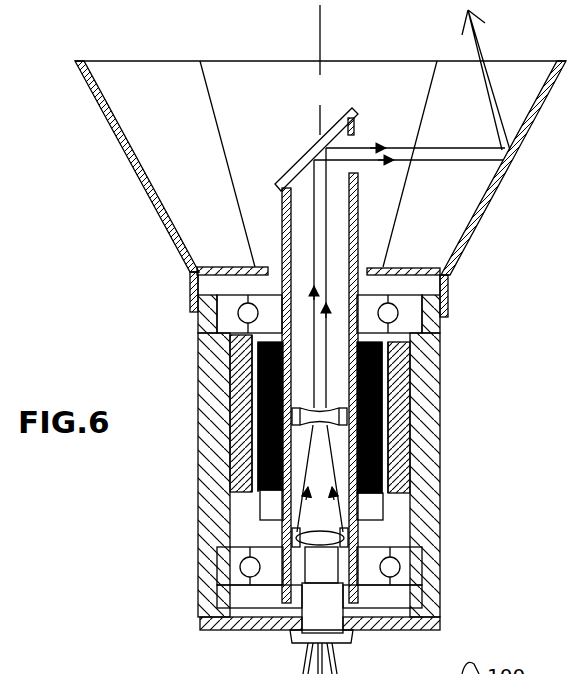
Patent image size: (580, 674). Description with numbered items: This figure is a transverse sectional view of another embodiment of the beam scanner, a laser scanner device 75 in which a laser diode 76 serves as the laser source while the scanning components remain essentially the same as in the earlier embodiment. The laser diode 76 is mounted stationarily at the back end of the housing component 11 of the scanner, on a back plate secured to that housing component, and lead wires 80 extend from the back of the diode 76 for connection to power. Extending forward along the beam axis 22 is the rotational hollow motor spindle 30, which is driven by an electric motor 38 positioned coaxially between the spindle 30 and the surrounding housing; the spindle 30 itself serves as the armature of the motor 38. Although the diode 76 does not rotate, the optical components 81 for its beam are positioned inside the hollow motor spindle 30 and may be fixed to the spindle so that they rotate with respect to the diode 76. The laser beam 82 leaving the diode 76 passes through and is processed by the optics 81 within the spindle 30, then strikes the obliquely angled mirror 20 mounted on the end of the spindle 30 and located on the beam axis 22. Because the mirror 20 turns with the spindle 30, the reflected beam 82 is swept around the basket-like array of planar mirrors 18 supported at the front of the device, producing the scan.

The housing member 11 is at (440, 482).
The planar mirrors 18 is at (107, 115).
The obliquely-oriented mirror 20 is at (305, 153).
The beam axis 22 is at (322, 36).
The hollow motor spindle 30 is at (358, 235).
The electric motor 38 is at (416, 386).
The laser scanner device 75 is at (140, 286).
The laser diode 76 is at (345, 633).
The lead wires 80 is at (337, 659).
The optical components 81 is at (305, 533).
The laser beam 82 is at (482, 42).